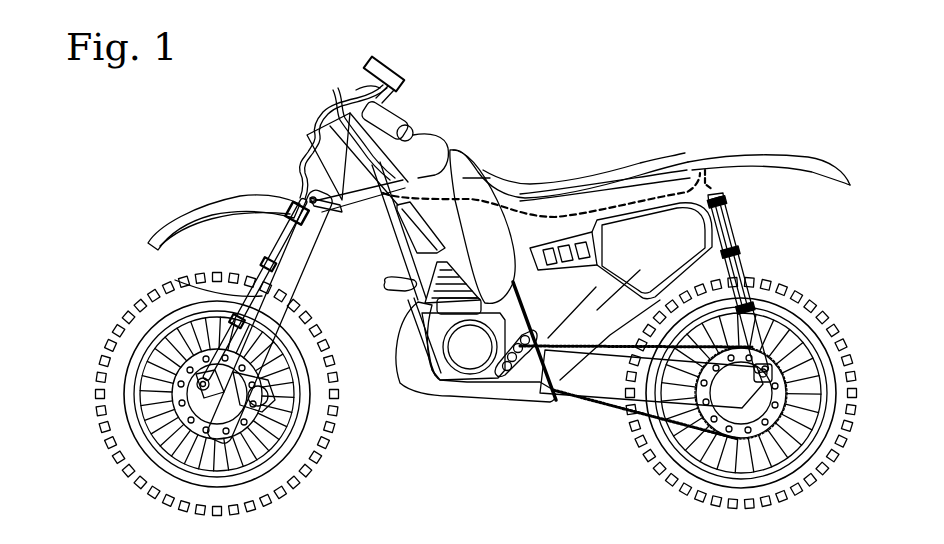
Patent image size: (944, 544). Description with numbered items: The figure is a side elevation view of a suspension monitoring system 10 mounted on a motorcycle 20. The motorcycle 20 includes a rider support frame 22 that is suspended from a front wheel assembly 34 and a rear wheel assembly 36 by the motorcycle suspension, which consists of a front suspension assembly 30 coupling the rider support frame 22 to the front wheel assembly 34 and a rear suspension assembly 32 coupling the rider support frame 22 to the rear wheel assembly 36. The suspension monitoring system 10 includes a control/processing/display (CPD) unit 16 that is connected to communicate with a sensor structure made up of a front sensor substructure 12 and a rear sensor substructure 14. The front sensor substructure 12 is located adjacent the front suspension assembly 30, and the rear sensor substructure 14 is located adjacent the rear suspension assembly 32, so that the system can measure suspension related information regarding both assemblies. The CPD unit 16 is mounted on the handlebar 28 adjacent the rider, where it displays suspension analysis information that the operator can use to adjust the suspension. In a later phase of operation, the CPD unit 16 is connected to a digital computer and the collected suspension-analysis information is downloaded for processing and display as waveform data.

The suspension monitoring system 10 is at (248, 120).
The front sensor substructure 12 is at (247, 293).
The rear sensor substructure 14 is at (762, 325).
The control/processing/display (CPD) unit 16 is at (395, 68).
The motorcycle 20 is at (619, 92).
The rider support frame 22 is at (478, 403).
The handlebar 28 is at (408, 112).
The front suspension assembly 30 is at (313, 273).
The rear suspension assembly 32 is at (600, 397).
The front wheel assembly 34 is at (98, 470).
The rear wheel assembly 36 is at (853, 445).